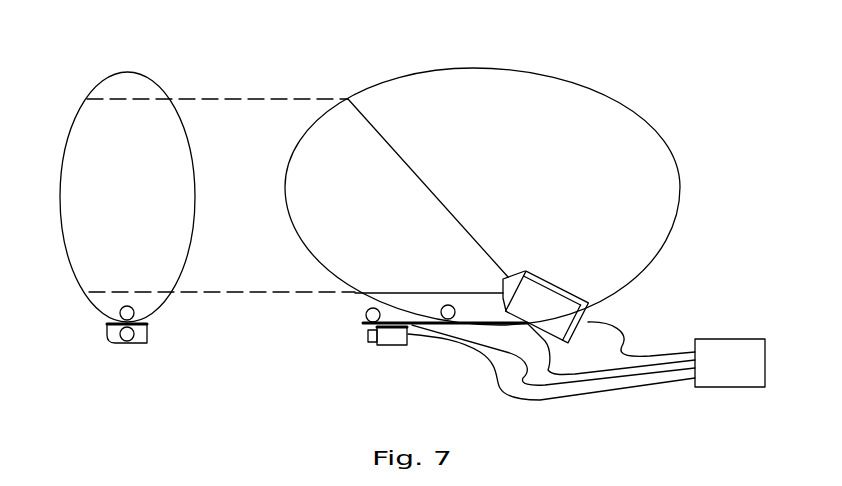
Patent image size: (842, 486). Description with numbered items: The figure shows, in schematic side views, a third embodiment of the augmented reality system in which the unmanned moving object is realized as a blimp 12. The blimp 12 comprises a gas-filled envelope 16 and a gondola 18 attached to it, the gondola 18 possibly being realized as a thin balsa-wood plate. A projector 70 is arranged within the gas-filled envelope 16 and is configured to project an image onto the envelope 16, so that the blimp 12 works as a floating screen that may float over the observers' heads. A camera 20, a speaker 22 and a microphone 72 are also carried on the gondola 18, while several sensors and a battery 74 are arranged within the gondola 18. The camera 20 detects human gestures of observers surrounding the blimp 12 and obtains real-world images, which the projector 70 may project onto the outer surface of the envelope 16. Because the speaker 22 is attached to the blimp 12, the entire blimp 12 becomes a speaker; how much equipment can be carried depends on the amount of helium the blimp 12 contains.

The blimp 12 is at (647, 120).
The gas-filled envelope 16 is at (529, 114).
The gondola 18 is at (470, 324).
The camera 20 is at (391, 346).
The speaker 22 is at (448, 306).
The projector 70 is at (558, 308).
The microphone 72 is at (368, 318).
The battery 74 is at (725, 379).